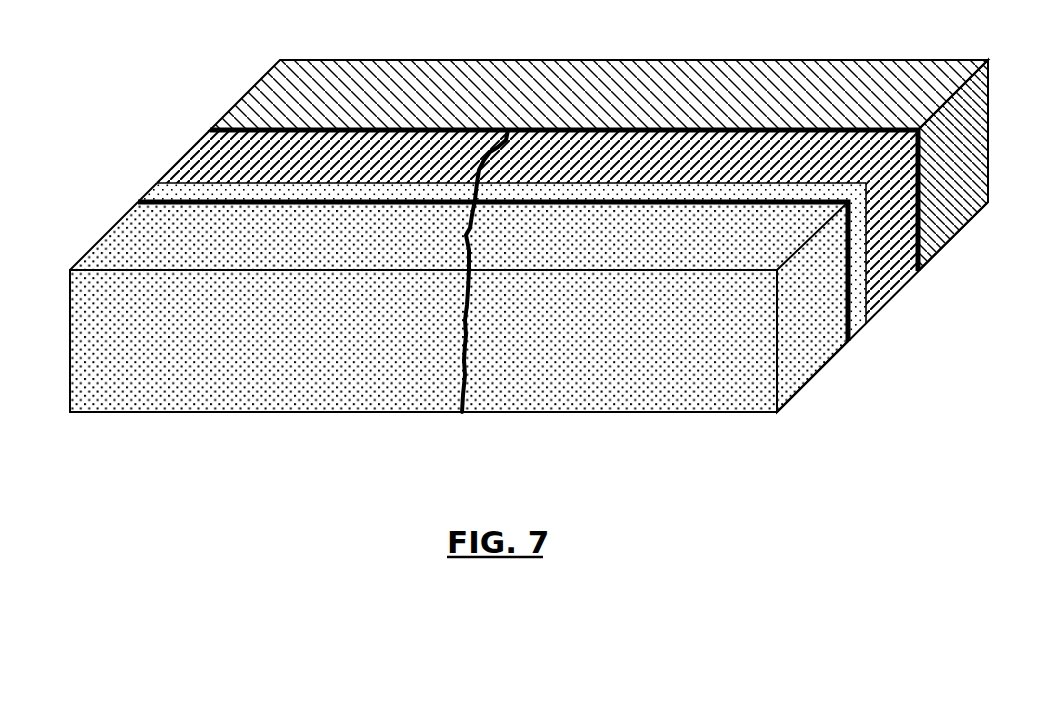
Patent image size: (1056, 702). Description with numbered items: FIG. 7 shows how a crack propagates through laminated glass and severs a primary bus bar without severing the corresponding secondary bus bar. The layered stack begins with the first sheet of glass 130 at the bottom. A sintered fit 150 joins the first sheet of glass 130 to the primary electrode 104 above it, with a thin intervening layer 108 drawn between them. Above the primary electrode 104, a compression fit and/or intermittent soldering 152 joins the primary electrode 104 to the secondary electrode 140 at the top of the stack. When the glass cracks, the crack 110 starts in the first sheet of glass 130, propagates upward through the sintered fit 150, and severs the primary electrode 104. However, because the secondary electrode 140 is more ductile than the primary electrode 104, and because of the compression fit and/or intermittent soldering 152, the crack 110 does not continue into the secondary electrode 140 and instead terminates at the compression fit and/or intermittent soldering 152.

The primary electrode 104 is at (887, 303).
The intermediate bond layer 108 is at (860, 328).
The crack 110 is at (470, 362).
The first sheet of glass 130 is at (810, 380).
The secondary electrode 140 is at (960, 233).
The sintered fit 150 is at (140, 200).
The compression fit and/or intermittent soldering 152 is at (210, 130).